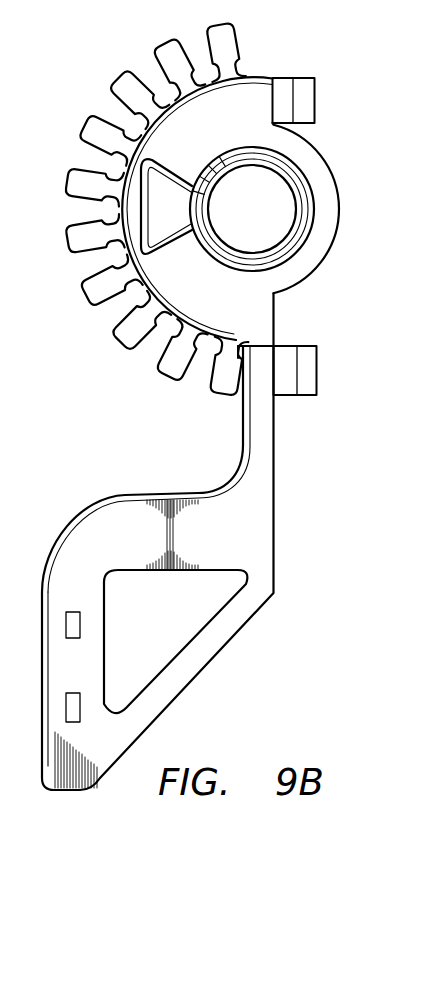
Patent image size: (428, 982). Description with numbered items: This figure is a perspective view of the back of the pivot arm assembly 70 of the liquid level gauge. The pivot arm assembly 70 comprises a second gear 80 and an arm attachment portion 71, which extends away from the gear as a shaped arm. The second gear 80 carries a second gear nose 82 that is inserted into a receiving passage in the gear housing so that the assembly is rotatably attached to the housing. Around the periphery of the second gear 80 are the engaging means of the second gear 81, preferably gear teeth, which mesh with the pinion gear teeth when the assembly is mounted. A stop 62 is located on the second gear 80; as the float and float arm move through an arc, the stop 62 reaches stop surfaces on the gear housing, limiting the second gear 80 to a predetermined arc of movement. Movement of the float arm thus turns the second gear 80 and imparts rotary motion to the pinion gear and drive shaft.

The pivot arm assembly 70 is at (232, 681).
The arm attachment portion 71 is at (100, 531).
The second gear 80 is at (252, 90).
The engaging means of the second gear 81 is at (127, 83).
The second gear nose 82 is at (243, 183).
The stop 62 is at (173, 249).